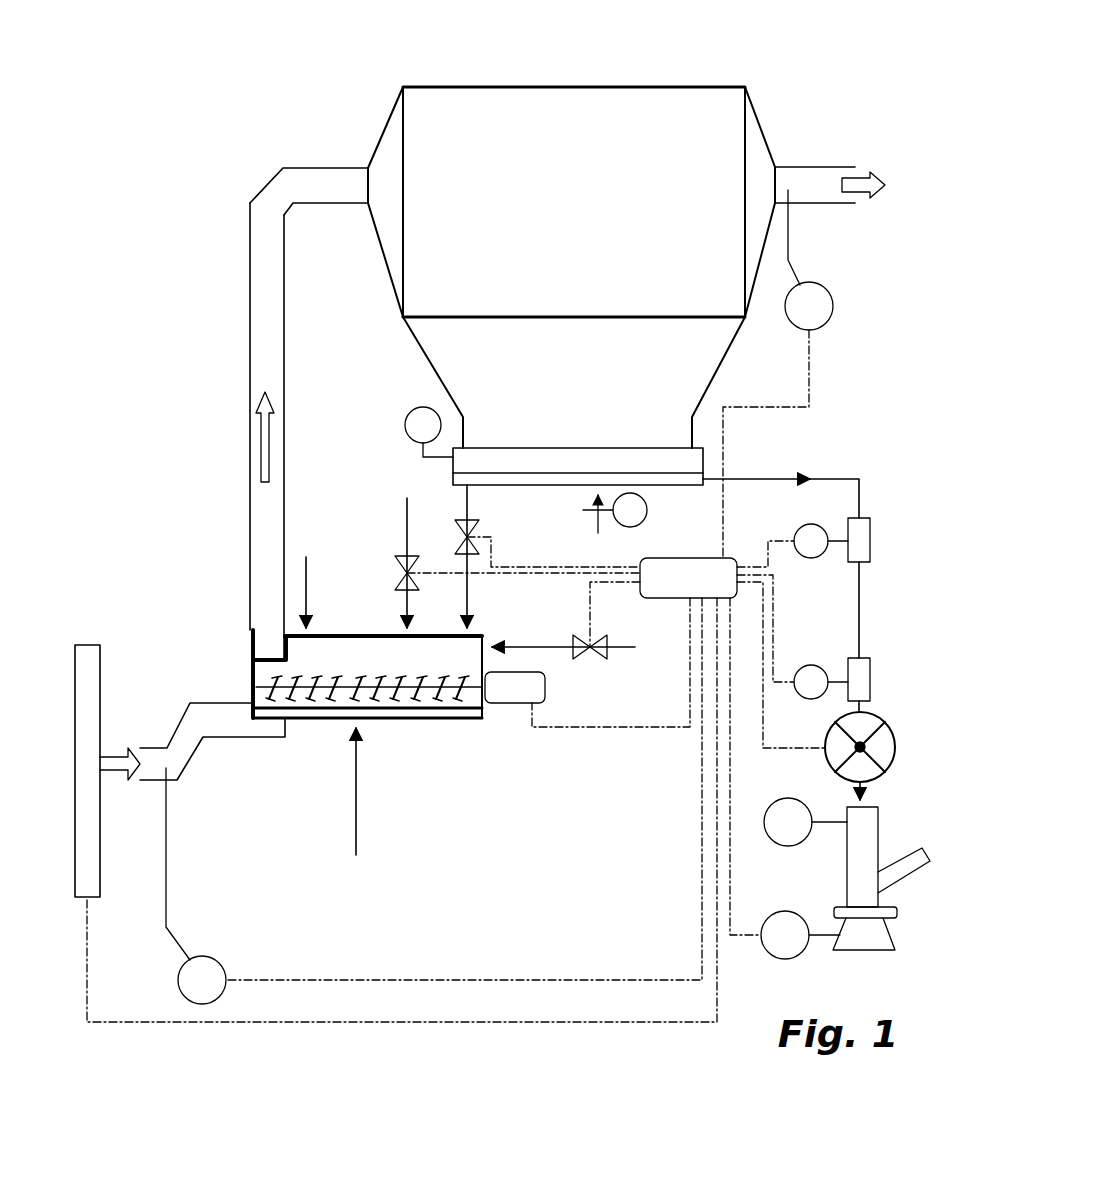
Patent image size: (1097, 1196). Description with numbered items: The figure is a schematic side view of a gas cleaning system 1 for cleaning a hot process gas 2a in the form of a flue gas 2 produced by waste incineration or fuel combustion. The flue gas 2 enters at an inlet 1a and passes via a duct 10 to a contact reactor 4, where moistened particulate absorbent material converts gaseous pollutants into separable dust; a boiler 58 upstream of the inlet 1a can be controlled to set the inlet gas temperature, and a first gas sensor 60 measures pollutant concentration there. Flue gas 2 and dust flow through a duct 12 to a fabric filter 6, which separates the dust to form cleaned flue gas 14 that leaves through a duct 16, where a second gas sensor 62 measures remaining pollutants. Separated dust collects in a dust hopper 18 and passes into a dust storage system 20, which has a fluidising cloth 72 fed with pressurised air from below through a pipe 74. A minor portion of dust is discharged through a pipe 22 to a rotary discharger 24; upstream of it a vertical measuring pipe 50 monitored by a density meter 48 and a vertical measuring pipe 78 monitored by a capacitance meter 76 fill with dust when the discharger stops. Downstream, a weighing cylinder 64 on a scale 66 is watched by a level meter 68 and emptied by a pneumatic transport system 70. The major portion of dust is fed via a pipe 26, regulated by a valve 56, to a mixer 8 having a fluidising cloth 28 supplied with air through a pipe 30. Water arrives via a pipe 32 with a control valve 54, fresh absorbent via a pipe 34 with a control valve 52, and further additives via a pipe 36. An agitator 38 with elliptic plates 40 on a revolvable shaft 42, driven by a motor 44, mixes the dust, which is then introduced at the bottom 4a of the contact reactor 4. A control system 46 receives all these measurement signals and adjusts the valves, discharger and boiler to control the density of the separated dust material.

The gas cleaning system 1 is at (260, 100).
The inlet 1a is at (150, 772).
The flue gas 2 is at (262, 436).
The hot process gas 2a is at (266, 467).
The contact reactor 4 is at (244, 378).
The bottom of the contact reactor 4a is at (250, 654).
The fabric filter 6 is at (545, 88).
The mixer 8 is at (367, 714).
The duct 10 is at (172, 744).
The duct 12 is at (330, 167).
The cleaned flue gas 14 is at (866, 174).
The duct 16 is at (840, 208).
The dust hopper 18 is at (432, 370).
The dust storage system 20 is at (578, 431).
The pipe 22 is at (822, 478).
The rotary discharger 24 is at (888, 728).
The pipe 26 is at (460, 566).
The fluidising cloth 28 is at (337, 705).
The pipe 30 is at (364, 826).
The pipe 32 is at (404, 530).
The pipe 34 is at (535, 646).
The pipe 36 is at (306, 556).
The agitator 38 is at (438, 696).
The elliptic plates 40 is at (370, 700).
The revolvable shaft 42 is at (294, 692).
The motor 44 is at (515, 705).
The control system 46 is at (660, 599).
The density meter 48 is at (814, 664).
The vertical measuring pipe 50 is at (872, 666).
The control valve 52 is at (580, 657).
The control valve 54 is at (398, 578).
The valve 56 is at (478, 536).
The boiler 58 is at (92, 644).
The first gas sensor 60 is at (191, 992).
The second gas sensor 62 is at (798, 318).
The weighing cylinder 64 is at (846, 876).
The scale 66 is at (774, 947).
The level meter 68 is at (777, 834).
The pneumatic transport system 70 is at (912, 872).
The fluidising cloth 72 is at (648, 466).
The pipe 74 is at (601, 513).
The capacitance meter 76 is at (797, 528).
The vertical measuring pipe 78 is at (871, 528).